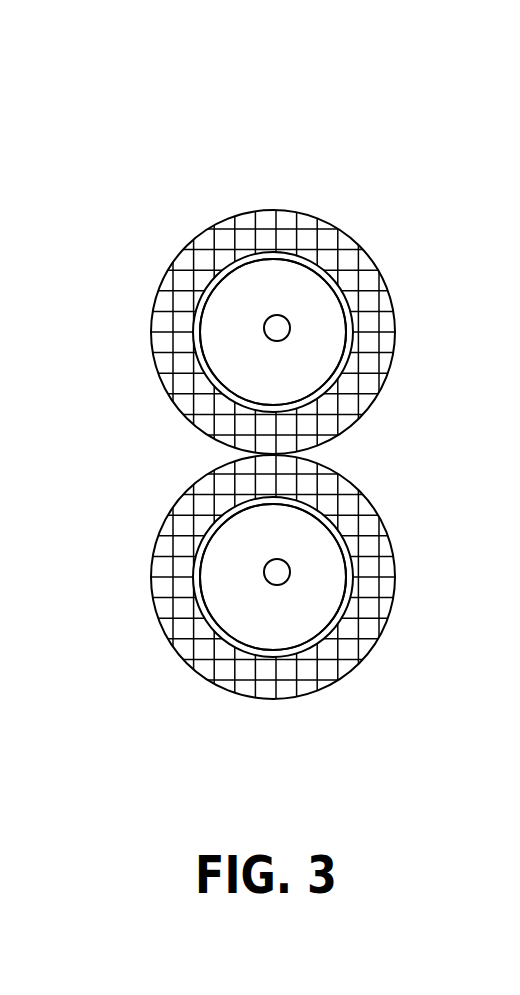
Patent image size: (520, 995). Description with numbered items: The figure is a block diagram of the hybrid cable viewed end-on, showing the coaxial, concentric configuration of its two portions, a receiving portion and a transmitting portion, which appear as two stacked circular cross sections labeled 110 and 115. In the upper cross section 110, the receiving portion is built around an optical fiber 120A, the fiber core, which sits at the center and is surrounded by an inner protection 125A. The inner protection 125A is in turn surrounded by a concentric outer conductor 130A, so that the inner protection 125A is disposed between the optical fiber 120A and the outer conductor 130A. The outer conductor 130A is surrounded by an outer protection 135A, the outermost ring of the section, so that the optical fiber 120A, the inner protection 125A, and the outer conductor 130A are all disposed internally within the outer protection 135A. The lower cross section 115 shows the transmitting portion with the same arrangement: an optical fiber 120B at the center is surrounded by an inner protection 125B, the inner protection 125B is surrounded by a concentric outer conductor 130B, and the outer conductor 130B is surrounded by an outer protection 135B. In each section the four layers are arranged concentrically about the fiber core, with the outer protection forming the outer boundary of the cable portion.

The first coaxial optical fiber cable 110 is at (153, 332).
The second coaxial optical fiber cable 115 is at (153, 577).
The optical fiber 120A is at (277, 330).
The inner protection 125A is at (255, 290).
The outer conductor 130A is at (216, 273).
The outer protection 135A is at (183, 285).
The optical fiber 120B is at (287, 573).
The inner protection 125B is at (295, 625).
The outer conductor 130B is at (240, 648).
The outer protection 135B is at (185, 623).